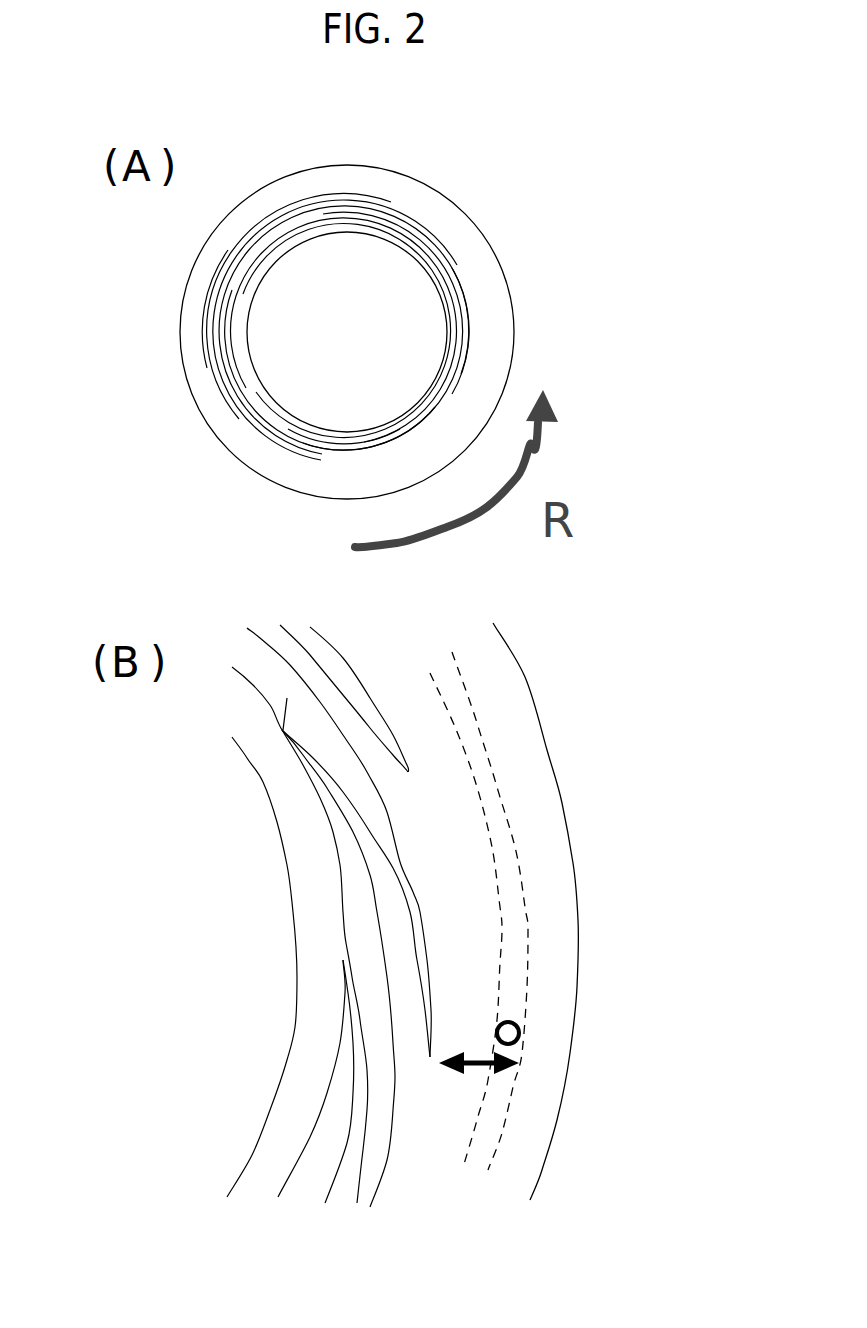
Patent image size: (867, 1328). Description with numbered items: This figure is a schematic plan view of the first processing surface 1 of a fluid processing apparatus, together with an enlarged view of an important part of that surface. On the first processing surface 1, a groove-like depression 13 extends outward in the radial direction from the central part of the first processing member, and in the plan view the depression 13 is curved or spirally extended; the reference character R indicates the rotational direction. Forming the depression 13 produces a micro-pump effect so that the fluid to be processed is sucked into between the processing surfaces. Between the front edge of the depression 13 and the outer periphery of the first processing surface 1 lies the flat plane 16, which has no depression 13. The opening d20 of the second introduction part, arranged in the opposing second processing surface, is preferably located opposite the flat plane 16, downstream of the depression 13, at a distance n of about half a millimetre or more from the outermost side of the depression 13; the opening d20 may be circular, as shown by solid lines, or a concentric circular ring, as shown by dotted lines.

The first processing surface 1 is at (232, 422).
The groove-like depression 13 is at (227, 370).
The flat plane 16 is at (452, 745).
The opening of the second introduction part d20 is at (512, 1020).